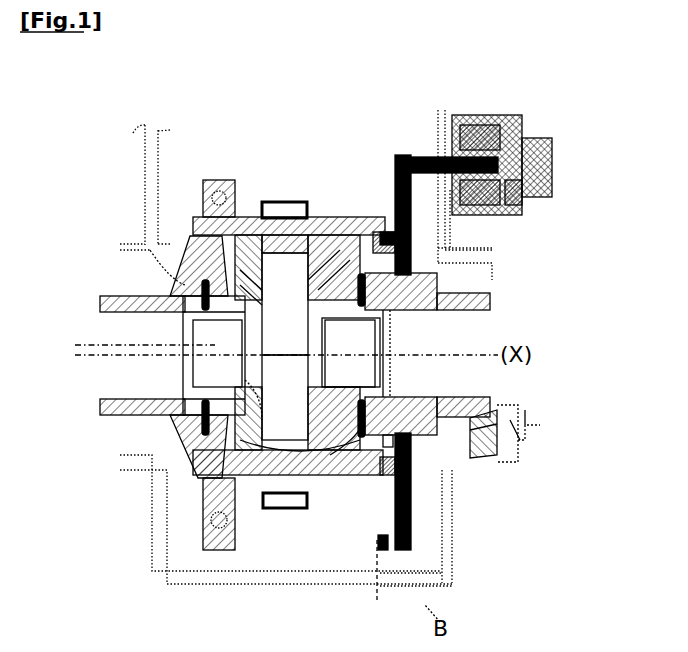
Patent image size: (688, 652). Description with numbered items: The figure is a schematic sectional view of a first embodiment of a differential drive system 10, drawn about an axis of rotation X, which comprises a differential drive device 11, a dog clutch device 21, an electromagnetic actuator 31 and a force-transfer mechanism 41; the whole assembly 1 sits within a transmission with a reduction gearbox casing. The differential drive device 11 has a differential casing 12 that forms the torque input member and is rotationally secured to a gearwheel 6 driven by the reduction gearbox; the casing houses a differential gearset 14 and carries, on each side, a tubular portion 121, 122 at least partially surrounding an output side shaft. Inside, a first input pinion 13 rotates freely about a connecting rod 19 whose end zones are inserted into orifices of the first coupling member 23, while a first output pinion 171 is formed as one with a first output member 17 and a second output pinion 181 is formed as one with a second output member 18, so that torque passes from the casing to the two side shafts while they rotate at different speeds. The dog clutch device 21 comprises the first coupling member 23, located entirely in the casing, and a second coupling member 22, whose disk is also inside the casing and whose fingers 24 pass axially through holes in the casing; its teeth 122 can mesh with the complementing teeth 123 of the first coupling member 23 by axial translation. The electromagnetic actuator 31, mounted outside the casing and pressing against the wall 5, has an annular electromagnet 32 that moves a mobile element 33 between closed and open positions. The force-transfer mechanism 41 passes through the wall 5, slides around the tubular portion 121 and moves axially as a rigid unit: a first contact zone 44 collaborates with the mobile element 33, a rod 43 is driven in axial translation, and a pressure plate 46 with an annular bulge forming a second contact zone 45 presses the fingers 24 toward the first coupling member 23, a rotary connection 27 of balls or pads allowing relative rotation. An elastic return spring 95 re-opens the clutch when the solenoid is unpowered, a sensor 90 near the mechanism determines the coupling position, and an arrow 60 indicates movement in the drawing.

The drive device 1 is at (18, 67).
The differential drive system 10 is at (114, 135).
The differential drive device 11 is at (149, 248).
The differential casing 12 is at (268, 200).
The first input pinion 13 is at (289, 346).
The differential gearset 14 is at (182, 282).
The first output member 17 is at (379, 354).
The second output member 18 is at (214, 355).
The connecting rod 19 is at (290, 346).
The dog clutch device 21 is at (378, 470).
The second coupling member 22 is at (375, 232).
The first coupling member 23 is at (318, 240).
The fingers 24 is at (343, 245).
The rotary connection 27 is at (412, 236).
The electromagnetic actuator 31 is at (416, 140).
The annular electromagnet 32 is at (505, 120).
The mobile element 33 is at (553, 185).
The force-transfer mechanism 41 is at (418, 520).
The rod 43 is at (440, 150).
The first contact zone 44 is at (552, 150).
The second contact zone 45 is at (412, 240).
The pressure plate 46 is at (420, 540).
The wall 5 is at (395, 160).
The gearwheel 6 is at (287, 202).
The lubricant flow 60 is at (304, 478).
The sensor 90 is at (388, 575).
The elastic return spring 95 is at (418, 470).
The tubular portion 121 is at (440, 301).
The tubular portion 122 is at (100, 306).
The complementing teeth 123 is at (282, 510).
The first output pinion 171 is at (323, 440).
The second output pinion 181 is at (271, 402).